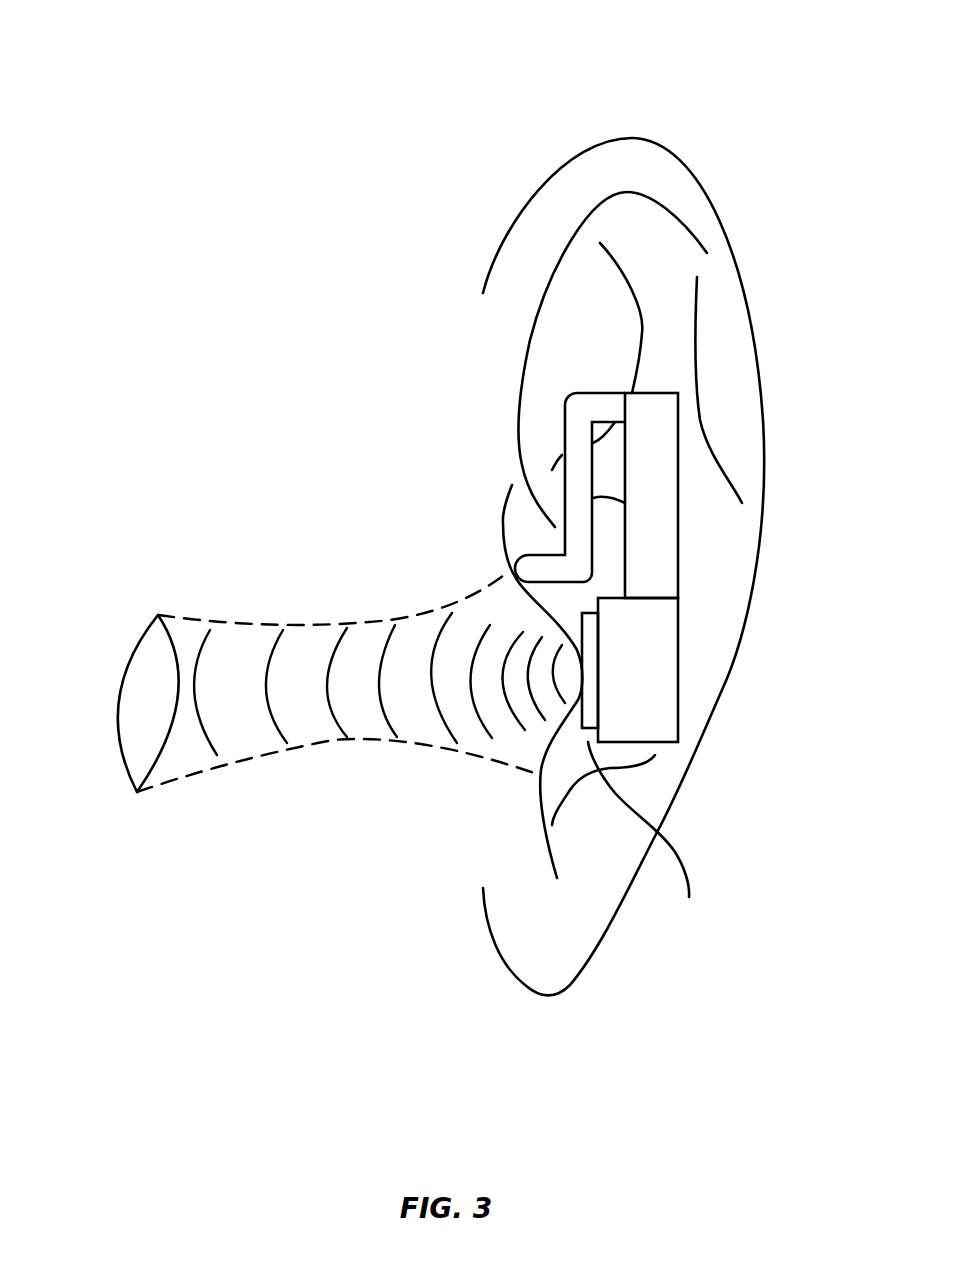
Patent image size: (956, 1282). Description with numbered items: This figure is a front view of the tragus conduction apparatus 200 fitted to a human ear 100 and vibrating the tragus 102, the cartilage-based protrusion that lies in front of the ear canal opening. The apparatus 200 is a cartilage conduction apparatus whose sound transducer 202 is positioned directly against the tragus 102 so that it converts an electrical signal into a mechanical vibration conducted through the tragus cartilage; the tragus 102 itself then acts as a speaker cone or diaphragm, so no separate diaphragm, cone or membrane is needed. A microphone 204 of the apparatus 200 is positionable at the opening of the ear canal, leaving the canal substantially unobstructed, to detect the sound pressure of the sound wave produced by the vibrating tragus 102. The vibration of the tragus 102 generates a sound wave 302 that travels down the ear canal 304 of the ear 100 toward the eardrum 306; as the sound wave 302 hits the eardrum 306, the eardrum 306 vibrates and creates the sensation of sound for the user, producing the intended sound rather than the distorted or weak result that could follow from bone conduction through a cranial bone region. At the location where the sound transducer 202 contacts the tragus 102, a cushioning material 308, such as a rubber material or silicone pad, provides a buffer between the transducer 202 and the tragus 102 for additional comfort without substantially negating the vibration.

The human ear 100 is at (617, 567).
The tragus 102 is at (562, 733).
The tragus conduction apparatus 200 is at (93, 100).
The sound transducer 202 is at (678, 663).
The microphone 204 is at (513, 558).
The sound wave 302 is at (351, 711).
The ear canal 304 is at (325, 751).
The eardrum 306 is at (152, 612).
The cushioning material 308 is at (645, 836).